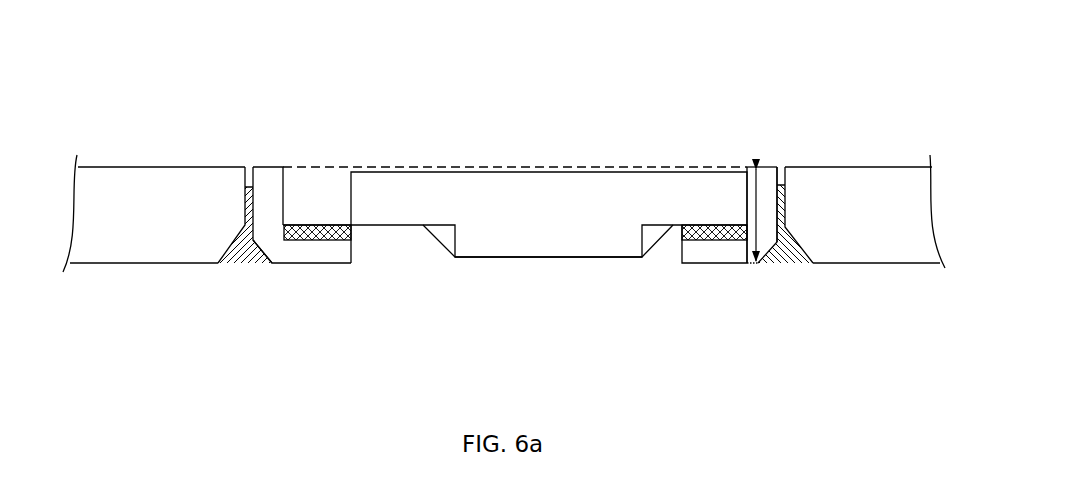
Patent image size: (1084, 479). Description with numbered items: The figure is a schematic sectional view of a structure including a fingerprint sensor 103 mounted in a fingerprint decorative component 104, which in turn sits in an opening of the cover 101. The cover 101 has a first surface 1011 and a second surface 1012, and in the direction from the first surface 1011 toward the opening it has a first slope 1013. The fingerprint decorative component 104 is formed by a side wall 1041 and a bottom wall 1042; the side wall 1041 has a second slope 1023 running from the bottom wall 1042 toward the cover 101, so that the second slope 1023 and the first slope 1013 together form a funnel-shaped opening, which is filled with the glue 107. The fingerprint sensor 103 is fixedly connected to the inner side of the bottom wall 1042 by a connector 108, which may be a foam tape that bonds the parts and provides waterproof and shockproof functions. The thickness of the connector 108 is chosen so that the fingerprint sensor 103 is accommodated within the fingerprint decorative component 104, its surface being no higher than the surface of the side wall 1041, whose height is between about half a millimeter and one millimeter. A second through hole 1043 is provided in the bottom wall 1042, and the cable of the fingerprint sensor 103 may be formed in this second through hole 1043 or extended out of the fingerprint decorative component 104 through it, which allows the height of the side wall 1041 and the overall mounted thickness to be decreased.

The cover 101 is at (855, 182).
The first surface 1011 is at (157, 263).
The second surface 1012 is at (137, 165).
The first slope 1013 is at (230, 264).
The second slope 1023 is at (265, 264).
The fingerprint sensor 103 is at (522, 187).
The fingerprint decorative component 104 is at (262, 187).
The side wall 1041 is at (755, 263).
The bottom wall 1042 is at (700, 263).
The second through hole 1043 is at (543, 277).
The glue 107 is at (792, 263).
The connector 108 is at (689, 228).